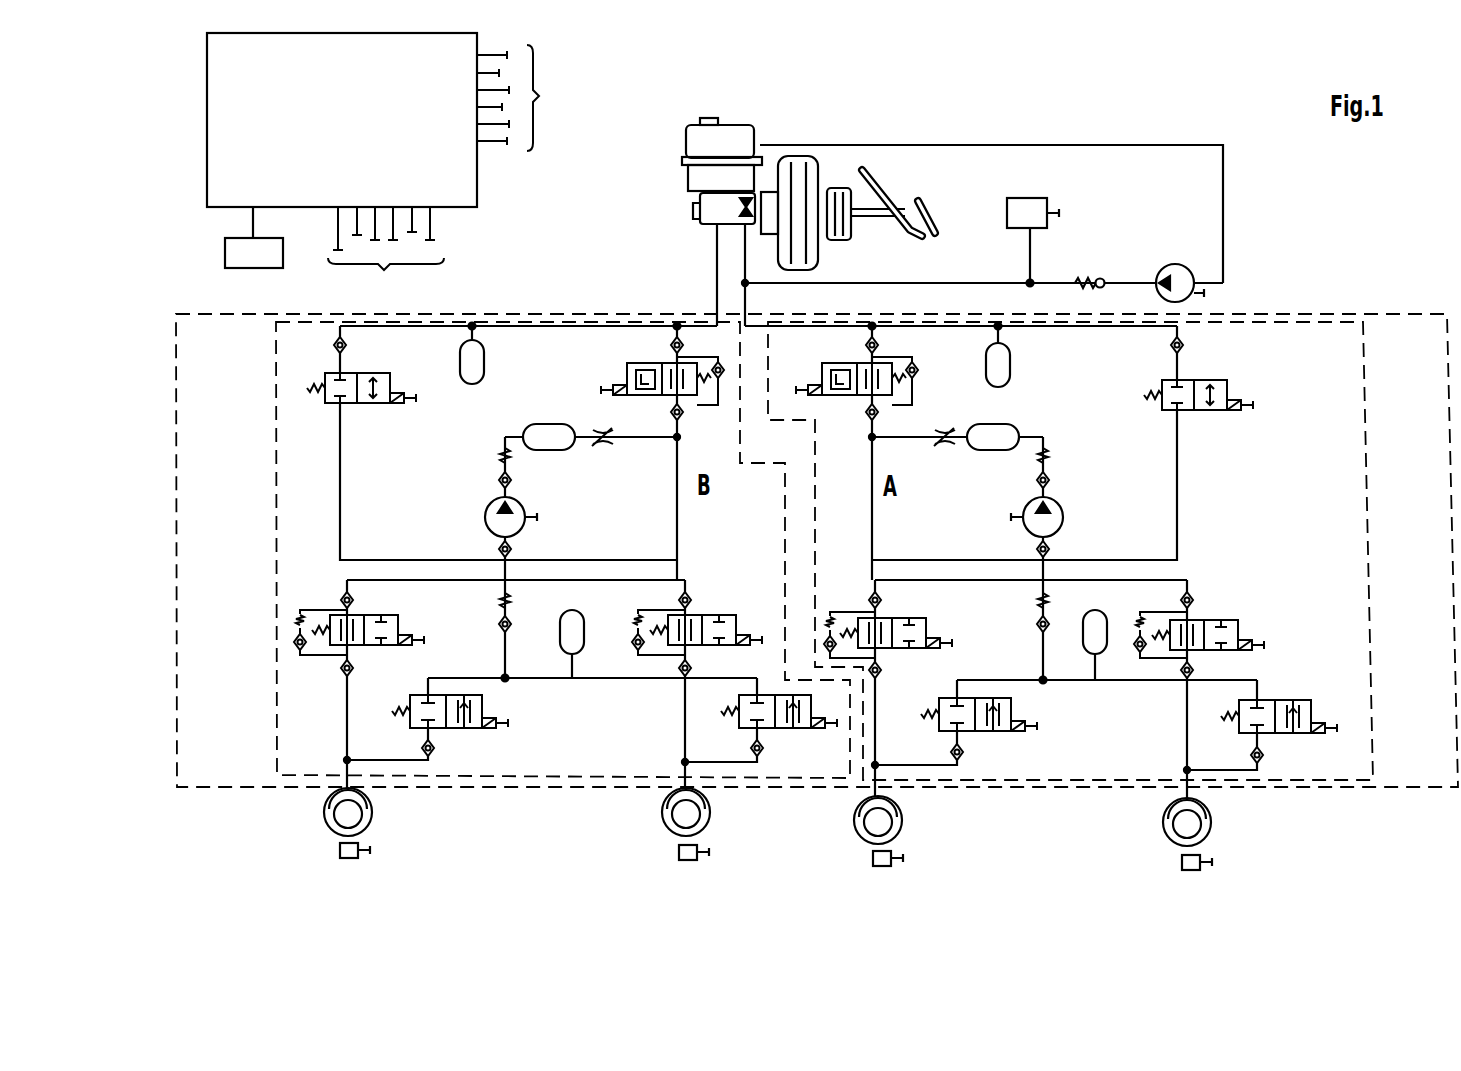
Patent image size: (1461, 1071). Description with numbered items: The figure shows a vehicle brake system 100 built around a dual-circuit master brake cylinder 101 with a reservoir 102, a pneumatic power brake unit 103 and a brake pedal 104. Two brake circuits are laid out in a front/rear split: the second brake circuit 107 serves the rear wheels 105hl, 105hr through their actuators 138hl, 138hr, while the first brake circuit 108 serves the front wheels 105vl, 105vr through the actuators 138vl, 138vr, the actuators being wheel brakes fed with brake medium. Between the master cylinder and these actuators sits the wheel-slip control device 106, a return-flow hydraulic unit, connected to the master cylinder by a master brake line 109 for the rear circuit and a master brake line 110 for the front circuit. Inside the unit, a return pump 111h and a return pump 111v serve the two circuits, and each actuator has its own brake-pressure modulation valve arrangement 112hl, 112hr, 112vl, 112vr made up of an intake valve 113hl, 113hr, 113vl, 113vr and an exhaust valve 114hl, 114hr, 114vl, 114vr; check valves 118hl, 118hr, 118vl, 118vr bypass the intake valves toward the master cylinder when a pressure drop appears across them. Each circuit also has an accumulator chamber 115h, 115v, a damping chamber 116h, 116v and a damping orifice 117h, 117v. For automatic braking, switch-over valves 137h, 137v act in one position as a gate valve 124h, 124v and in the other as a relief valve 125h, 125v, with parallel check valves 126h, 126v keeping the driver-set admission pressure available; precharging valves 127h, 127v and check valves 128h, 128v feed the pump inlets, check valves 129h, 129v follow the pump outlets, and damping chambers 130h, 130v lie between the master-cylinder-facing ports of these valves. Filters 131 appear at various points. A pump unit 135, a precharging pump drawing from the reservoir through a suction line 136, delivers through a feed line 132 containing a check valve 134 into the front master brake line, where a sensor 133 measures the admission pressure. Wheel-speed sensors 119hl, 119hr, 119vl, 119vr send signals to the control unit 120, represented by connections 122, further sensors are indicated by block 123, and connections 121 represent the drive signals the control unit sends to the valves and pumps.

The vehicle brake system 100 is at (1343, 226).
The master brake cylinder 101 is at (698, 215).
The reservoir 102 is at (745, 132).
The pneumatic power brake unit 103 is at (802, 170).
The brake pedal 104 is at (922, 215).
The rear left wheel 105hl is at (368, 822).
The rear right wheel 105hr is at (706, 822).
The front left wheel 105vl is at (898, 830).
The front right wheel 105vr is at (1208, 830).
The wheel-slip control device 106 is at (1398, 314).
The second brake circuit 107 is at (275, 512).
The first brake circuit 108 is at (1368, 475).
The master brake line 109 is at (717, 268).
The master brake line 110 is at (745, 247).
The return pump 111h is at (485, 517).
The return pump 111v is at (1065, 518).
The brake-pressure modulation valve arrangement 112hl is at (439, 692).
The brake-pressure modulation valve arrangement 112hr is at (753, 692).
The brake-pressure modulation valve arrangement 112vl is at (962, 697).
The brake-pressure modulation valve arrangement 112vr is at (1282, 698).
The intake valve 113hl is at (365, 645).
The intake valve 113hr is at (706, 645).
The intake valve 113vl is at (893, 622).
The intake valve 113vr is at (1205, 622).
The exhaust valve 114hl is at (445, 728).
The exhaust valve 114hr is at (760, 730).
The exhaust valve 114vl is at (968, 732).
The exhaust valve 114vr is at (1275, 735).
The accumulator chamber 115h is at (585, 660).
The accumulator chamber 115v is at (1098, 660).
The first damping chamber 116h is at (558, 450).
The second damping chamber 116v is at (1015, 425).
The damping orifice 117h is at (605, 445).
The damping orifice 117v is at (945, 448).
The check valve 118hl is at (297, 650).
The check valve 118hr is at (640, 655).
The check valve 118vl is at (832, 612).
The check valve 118vr is at (1142, 658).
The wheel-speed sensor 119hl is at (340, 851).
The wheel-speed sensor 119hr is at (679, 853).
The wheel-speed sensor 119vl is at (892, 866).
The wheel-speed sensor 119vr is at (1182, 862).
The control unit 120 is at (207, 96).
The connections 121 is at (531, 98).
The connections 122 is at (386, 254).
The block of further sensors 123 is at (225, 256).
The gate valve 124h is at (700, 360).
The gate valve 124v is at (885, 358).
The relief valve 125h is at (640, 370).
The relief valve 125v is at (835, 372).
The check valve 126h is at (722, 380).
The check valve 126v is at (918, 375).
The precharging valve 127h is at (355, 403).
The precharging valve 127v is at (1205, 380).
The check valve 128h is at (512, 604).
The check valve 128v is at (1040, 612).
The check valve 129h is at (498, 458).
The check valve 129v is at (1050, 458).
The damping chamber 130h is at (484, 362).
The damping chamber 130v is at (1010, 365).
The filter 131 is at (1185, 345).
The feed line 132 is at (880, 283).
The sensor 133 is at (1040, 226).
The check valve 134 is at (1103, 278).
The pump unit 135 is at (1180, 265).
The suction line 136 is at (1160, 145).
The switch-over valve 137h is at (665, 396).
The switch-over valve 137v is at (862, 398).
The actuator 138hl is at (368, 797).
The actuator 138hr is at (706, 797).
The actuator 138vl is at (898, 805).
The actuator 138vr is at (1208, 808).